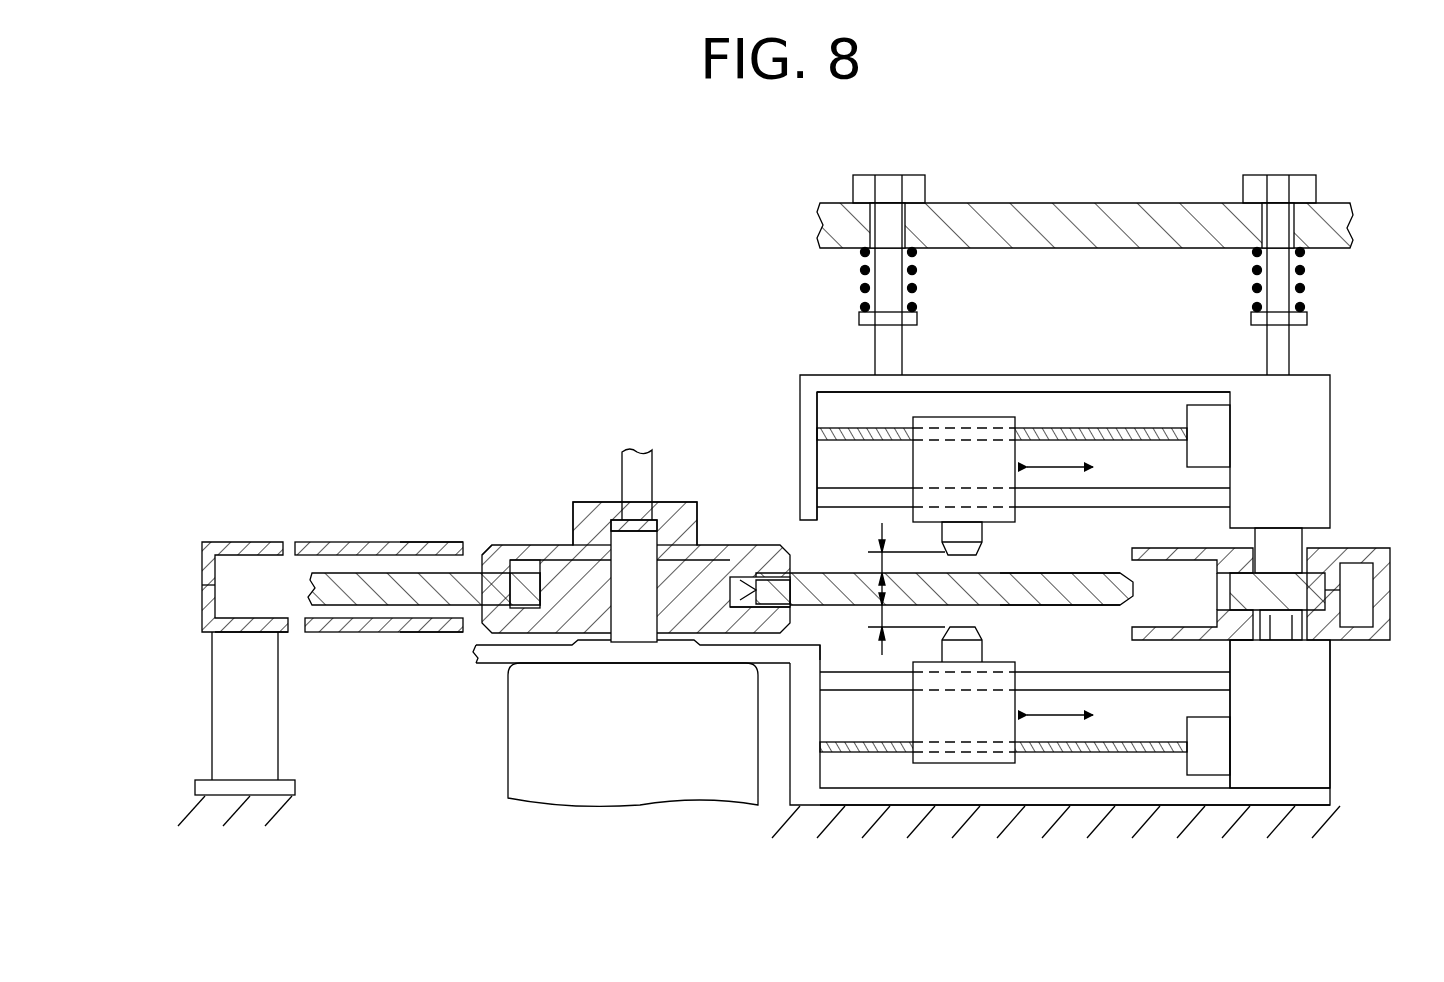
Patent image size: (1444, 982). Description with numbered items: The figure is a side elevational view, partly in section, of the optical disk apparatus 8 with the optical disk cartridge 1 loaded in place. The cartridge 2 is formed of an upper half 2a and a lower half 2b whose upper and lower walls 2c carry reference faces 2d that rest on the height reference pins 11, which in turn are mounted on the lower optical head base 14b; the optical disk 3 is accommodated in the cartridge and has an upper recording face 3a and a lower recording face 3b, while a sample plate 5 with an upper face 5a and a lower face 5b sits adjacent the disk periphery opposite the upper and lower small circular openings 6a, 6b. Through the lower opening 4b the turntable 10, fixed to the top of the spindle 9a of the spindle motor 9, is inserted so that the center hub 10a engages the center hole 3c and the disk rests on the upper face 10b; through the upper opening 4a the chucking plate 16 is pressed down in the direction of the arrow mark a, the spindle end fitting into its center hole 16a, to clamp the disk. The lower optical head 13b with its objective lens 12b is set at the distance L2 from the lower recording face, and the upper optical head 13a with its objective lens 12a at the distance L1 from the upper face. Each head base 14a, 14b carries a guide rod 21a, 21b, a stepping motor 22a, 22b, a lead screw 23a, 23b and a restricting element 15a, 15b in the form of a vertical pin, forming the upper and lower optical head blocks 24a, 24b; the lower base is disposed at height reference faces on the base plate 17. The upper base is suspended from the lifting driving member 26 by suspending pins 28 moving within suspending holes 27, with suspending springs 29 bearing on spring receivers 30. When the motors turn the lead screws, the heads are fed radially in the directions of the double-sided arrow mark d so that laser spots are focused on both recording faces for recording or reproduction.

The optical disk cartridge 1 is at (372, 518).
The cartridge 2 is at (248, 540).
The upper half 2a is at (335, 540).
The lower half 2b is at (328, 634).
The upper and lower walls 2c is at (415, 540).
The reference faces 2d is at (250, 634).
The optical disk 3 is at (1105, 586).
The upper recording face 3a is at (1060, 572).
The lower recording face 3b is at (1060, 607).
The center hole 3c is at (740, 578).
The upper opening 4a is at (482, 548).
The lower opening 4b is at (480, 642).
The sample plate 5 is at (1385, 592).
The upper face of sample plate 5a is at (1247, 572).
The lower face of sample plate 5b is at (1215, 641).
The upper small circular opening 6a is at (1292, 562).
The lower small circular opening 6b is at (1296, 640).
The optical disk apparatus 8 is at (760, 868).
The spindle motor 9 is at (580, 775).
The spindle 9a is at (628, 610).
The turntable 10 is at (497, 636).
The center hub 10a is at (560, 590).
The upper face of turntable 10b is at (745, 600).
The height reference pins 11 is at (1318, 764).
The upper objective lens 12a is at (908, 502).
The lower objective lens 12b is at (936, 652).
The upper optical head 13a is at (962, 446).
The lower optical head 13b is at (948, 735).
The upper optical head base 14a is at (1108, 380).
The lower optical head base 14b is at (1055, 797).
The upper restricting element 15a is at (1282, 540).
The lower restricting element 15b is at (1278, 636).
The chucking plate 16 is at (596, 520).
The center hole of chucking plate 16a is at (642, 526).
The base plate 17 is at (1290, 800).
The upper guide rod 21a is at (1095, 466).
The lower guide rod 21b is at (1097, 714).
The upper stepping motor 22a is at (1208, 414).
The lower stepping motor 22b is at (1218, 768).
The upper lead screw 23a is at (1130, 432).
The lower lead screw 23b is at (1125, 754).
The upper optical head block 24a is at (790, 372).
The lower optical head block 24b is at (887, 762).
The lifting driving member 26 is at (1052, 215).
The suspending holes 27 is at (868, 232).
The suspending pins 28 is at (892, 212).
The suspending springs 29 is at (920, 271).
The spring receivers 30 is at (870, 320).
The arrow mark a is at (637, 433).
The double-sided arrow mark d is at (1050, 428).
The distance L1 is at (868, 552).
The distance L2 is at (868, 627).